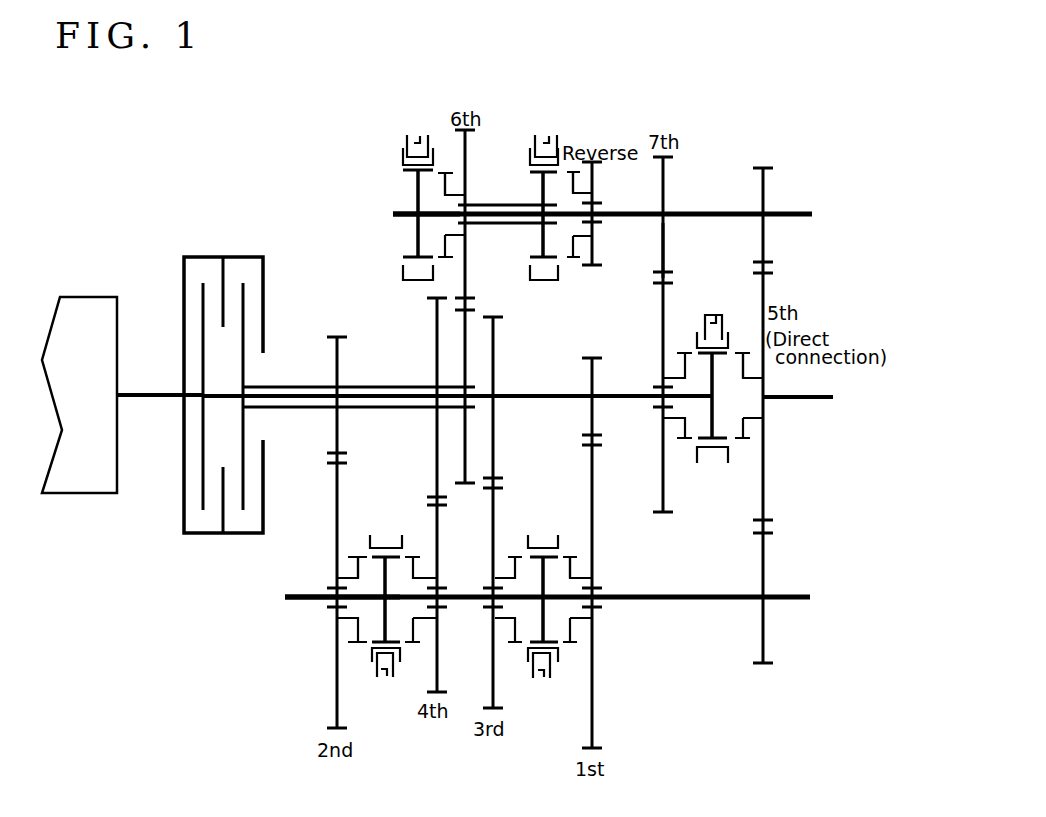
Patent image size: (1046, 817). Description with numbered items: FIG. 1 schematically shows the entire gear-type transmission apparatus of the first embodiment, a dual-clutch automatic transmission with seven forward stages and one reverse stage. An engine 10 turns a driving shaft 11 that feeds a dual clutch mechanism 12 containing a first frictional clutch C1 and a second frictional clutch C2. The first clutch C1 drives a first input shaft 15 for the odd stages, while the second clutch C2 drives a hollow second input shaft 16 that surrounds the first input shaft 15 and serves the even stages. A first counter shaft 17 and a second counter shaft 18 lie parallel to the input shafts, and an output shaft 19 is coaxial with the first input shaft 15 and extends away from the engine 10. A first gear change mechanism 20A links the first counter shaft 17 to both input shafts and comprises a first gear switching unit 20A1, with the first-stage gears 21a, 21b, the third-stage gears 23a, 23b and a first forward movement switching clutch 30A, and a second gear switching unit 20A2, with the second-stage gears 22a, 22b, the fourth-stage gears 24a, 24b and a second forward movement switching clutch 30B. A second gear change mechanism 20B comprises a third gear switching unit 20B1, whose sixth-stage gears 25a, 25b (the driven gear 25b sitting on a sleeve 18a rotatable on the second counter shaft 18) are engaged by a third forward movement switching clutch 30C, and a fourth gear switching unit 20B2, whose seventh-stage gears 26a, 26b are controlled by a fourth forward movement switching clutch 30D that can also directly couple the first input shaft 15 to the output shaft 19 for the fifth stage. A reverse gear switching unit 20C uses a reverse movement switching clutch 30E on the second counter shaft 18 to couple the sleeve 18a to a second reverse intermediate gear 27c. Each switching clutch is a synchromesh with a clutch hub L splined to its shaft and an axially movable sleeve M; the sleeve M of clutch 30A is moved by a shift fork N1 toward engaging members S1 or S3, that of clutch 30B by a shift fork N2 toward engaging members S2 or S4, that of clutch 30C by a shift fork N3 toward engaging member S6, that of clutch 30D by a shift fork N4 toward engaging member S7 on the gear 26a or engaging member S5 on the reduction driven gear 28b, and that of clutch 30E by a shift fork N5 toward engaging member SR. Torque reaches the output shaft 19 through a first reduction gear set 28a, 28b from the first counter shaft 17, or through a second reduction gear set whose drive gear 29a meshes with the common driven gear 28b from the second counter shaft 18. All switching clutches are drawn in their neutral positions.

The engine 10 is at (87, 315).
The driving shaft 11 is at (150, 393).
The dual clutch mechanism 12 is at (180, 495).
The first frictional clutch C1 is at (202, 525).
The second frictional clutch C2 is at (237, 525).
The first input shaft 15 is at (317, 405).
The second input shaft 16 is at (277, 383).
The first counter shaft 17 is at (310, 601).
The second counter shaft 18 is at (400, 216).
The sleeve 18a is at (480, 226).
The output shaft 19 is at (787, 394).
The first gear change mechanism 20A is at (370, 764).
The first gear switching unit 20A1 is at (534, 729).
The second gear switching unit 20A2 is at (412, 737).
The second gear change mechanism 20B is at (311, 190).
The third gear switching unit 20B1 is at (442, 91).
The fourth gear switching unit 20B2 is at (727, 166).
The reverse gear switching unit 20C is at (604, 121).
The driving gear of 1st shift stage 21a is at (594, 413).
The driven gear of 1st shift stage 21b is at (594, 702).
The driving gear of 2nd shift stage 22a is at (338, 430).
The driven gear of 2nd shift stage 22b is at (337, 502).
The driving gear of 3rd shift stage 23a is at (497, 445).
The driven gear of 3rd shift stage 23b is at (493, 522).
The driving gear of 4th shift stage 24a is at (436, 333).
The driven gear of 4th shift stage 24b is at (438, 663).
The driving gear of 6th shift stage 25a is at (467, 342).
The driven gear of 6th shift stage 25b is at (467, 285).
The driving gear of 7th shift stage 26a is at (663, 308).
The driven gear of 7th shift stage 26b is at (664, 254).
The second reverse shift stage intermediate gear 27c is at (593, 245).
The first reduction gear set driving gear 28a is at (764, 578).
The driven gear of first reduction gear set 28b is at (764, 444).
The second reduction gear set driving gear 29a is at (765, 197).
The first forward movement switching clutch 30A is at (568, 653).
The second forward movement switching clutch 30B is at (358, 653).
The third forward movement switching clutch 30C is at (396, 167).
The fourth forward movement switching clutch 30D is at (743, 324).
The reverse movement switching clutch 30E is at (521, 168).
The 1st shift stage engaging member S1 is at (572, 555).
The 2nd shift stage engaging member S2 is at (355, 555).
The 3rd shift stage engaging member S3 is at (512, 555).
The 4th shift stage engaging member S4 is at (415, 555).
The 5th shift stage engaging member S5 is at (745, 440).
The 6th shift stage engaging member S6 is at (445, 271).
The 7th shift stage engaging member S7 is at (682, 440).
The reverse shift stage engaging member SR is at (568, 262).
The shift fork N1 is at (543, 678).
The shift fork N2 is at (387, 678).
The shift fork N3 is at (418, 134).
The shift fork N4 is at (713, 314).
The shift fork N5 is at (547, 134).
The sleeve M is at (403, 156).
The clutch hub L is at (415, 186).